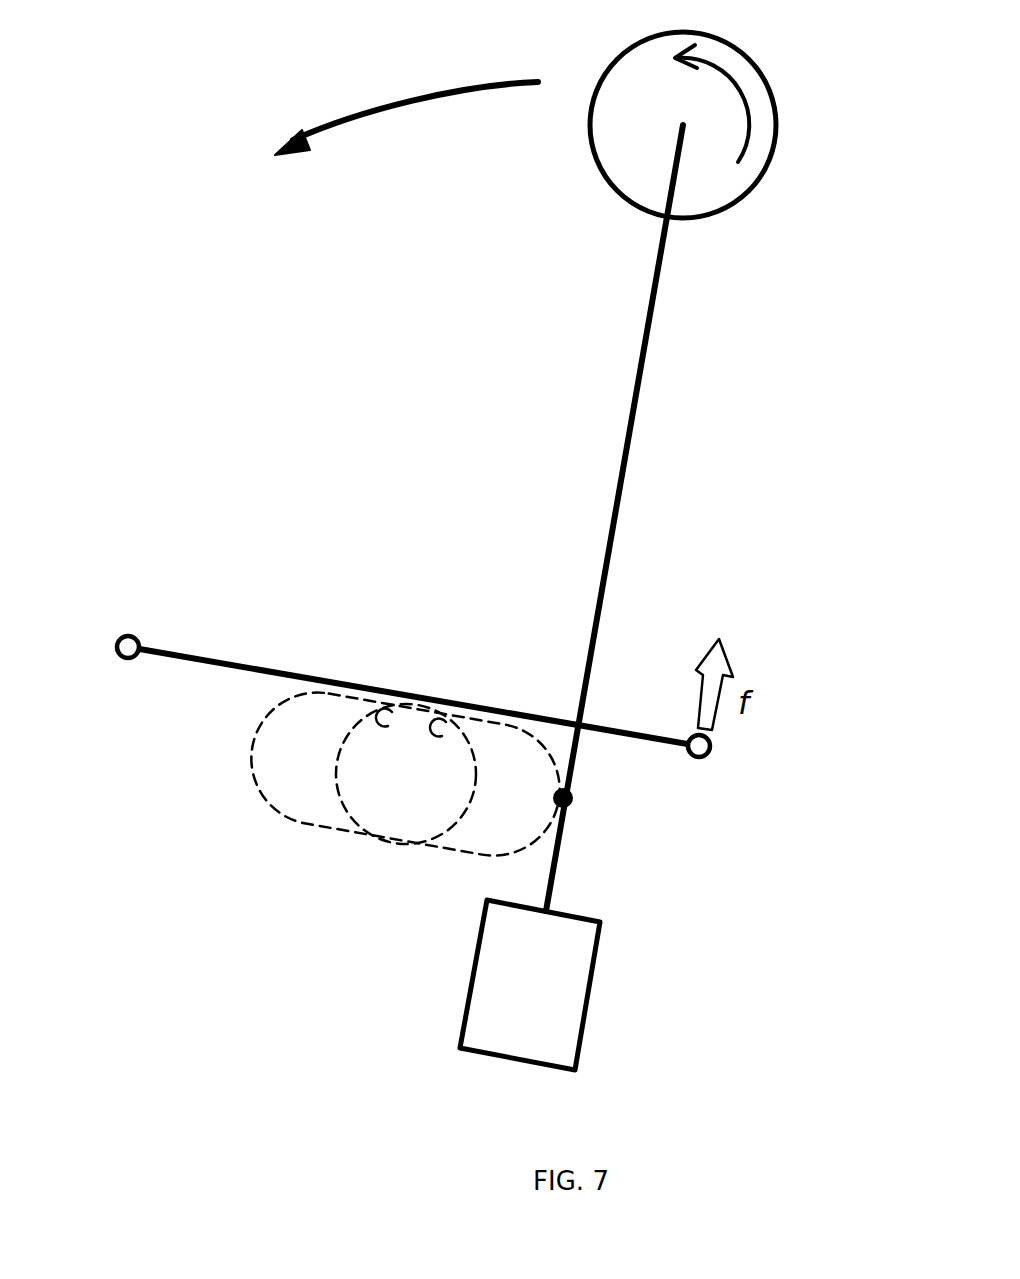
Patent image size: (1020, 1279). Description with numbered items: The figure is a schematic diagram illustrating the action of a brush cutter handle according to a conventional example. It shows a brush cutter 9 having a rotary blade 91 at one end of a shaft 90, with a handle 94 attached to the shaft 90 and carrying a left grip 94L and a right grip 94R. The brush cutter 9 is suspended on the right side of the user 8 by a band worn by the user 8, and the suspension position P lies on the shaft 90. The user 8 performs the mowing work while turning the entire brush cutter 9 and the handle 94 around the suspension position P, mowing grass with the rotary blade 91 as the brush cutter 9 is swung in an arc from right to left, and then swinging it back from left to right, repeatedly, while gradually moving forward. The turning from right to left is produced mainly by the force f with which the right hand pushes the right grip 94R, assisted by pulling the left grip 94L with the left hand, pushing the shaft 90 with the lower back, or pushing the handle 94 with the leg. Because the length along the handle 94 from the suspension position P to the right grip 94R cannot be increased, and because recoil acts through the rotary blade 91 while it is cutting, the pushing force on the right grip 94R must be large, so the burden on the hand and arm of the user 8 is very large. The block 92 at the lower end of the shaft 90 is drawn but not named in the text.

The rotary blade 91 is at (738, 200).
The shaft 90 is at (640, 390).
The handle 94 is at (310, 673).
The left grip 94L is at (130, 635).
The right grip 94R is at (699, 758).
The suspension position P is at (572, 800).
The user 8 is at (405, 788).
The mass block 92 is at (596, 968).
The brush cutter 9 is at (493, 1070).